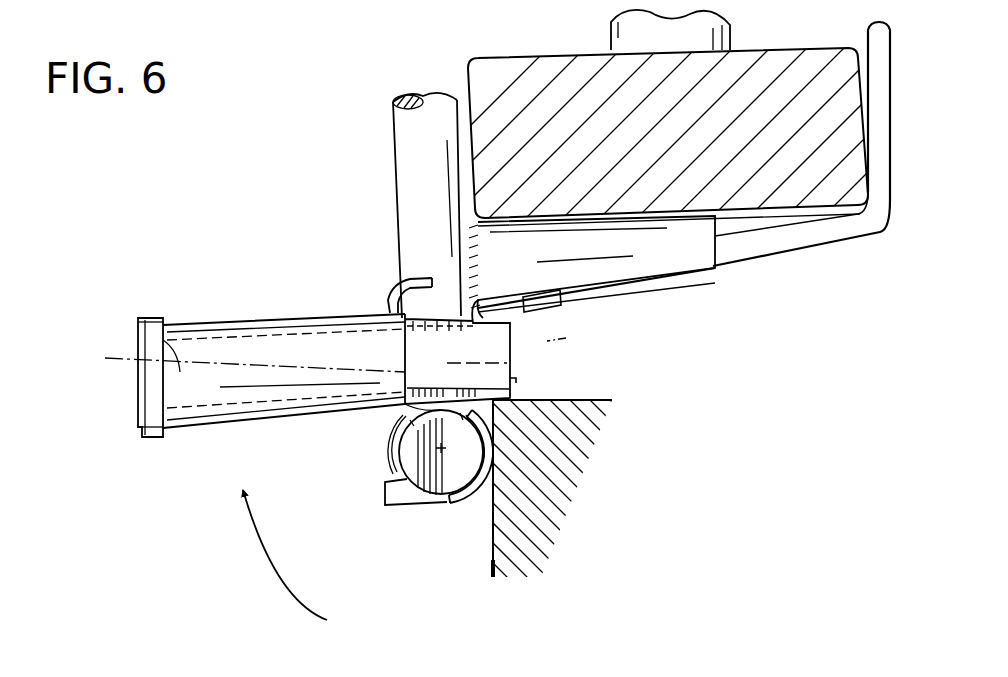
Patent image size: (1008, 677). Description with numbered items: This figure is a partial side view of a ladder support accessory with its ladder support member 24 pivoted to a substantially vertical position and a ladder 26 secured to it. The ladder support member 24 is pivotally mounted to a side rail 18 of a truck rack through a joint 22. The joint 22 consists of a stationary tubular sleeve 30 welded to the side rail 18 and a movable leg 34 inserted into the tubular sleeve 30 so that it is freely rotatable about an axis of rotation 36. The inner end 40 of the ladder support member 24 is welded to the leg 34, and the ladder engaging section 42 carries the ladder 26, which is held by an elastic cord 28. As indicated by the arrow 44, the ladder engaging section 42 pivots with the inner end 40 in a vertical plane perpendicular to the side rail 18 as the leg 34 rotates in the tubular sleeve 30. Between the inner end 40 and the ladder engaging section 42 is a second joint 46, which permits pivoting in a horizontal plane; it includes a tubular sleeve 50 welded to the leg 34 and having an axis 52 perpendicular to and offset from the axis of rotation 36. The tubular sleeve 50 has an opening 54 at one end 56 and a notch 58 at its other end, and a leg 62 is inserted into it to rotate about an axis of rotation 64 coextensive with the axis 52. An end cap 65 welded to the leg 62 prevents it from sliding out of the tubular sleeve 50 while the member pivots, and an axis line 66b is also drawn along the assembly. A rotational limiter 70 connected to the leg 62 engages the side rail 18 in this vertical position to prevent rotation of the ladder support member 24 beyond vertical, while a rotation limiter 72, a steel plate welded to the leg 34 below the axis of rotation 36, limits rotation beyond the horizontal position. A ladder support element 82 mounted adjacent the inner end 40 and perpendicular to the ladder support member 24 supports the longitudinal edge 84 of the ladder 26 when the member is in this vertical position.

The side rail 18 is at (570, 400).
The joint 22 is at (352, 456).
The ladder support member 24 is at (388, 170).
The ladder 26 is at (800, 30).
The elastic cord 28 is at (820, 246).
The tubular sleeve 30 is at (473, 500).
The leg 34 is at (395, 445).
The axis of rotation 36 is at (440, 452).
The inner end 40 is at (393, 446).
The ladder engaging section 42 is at (400, 121).
The arrow 44 is at (282, 573).
The joint 46 is at (365, 298).
The tubular sleeve 50 is at (276, 316).
The axis 52 is at (170, 372).
The opening 54 is at (166, 338).
The end 56 is at (180, 427).
The notch 58 is at (407, 357).
The leg 62 is at (560, 383).
The axis of rotation 64 is at (520, 360).
The end cap 65 is at (152, 318).
The tube axis 66b is at (407, 371).
The rotational limiter 70 is at (513, 336).
The rotation limiter 72 is at (418, 495).
The ladder support element 82 is at (683, 288).
The longitudinal edge 84 is at (553, 92).